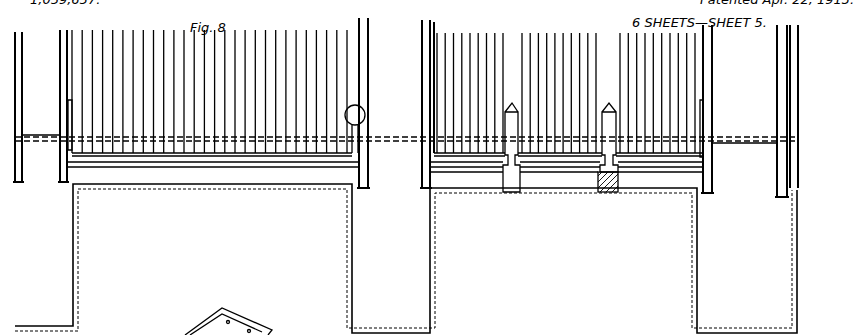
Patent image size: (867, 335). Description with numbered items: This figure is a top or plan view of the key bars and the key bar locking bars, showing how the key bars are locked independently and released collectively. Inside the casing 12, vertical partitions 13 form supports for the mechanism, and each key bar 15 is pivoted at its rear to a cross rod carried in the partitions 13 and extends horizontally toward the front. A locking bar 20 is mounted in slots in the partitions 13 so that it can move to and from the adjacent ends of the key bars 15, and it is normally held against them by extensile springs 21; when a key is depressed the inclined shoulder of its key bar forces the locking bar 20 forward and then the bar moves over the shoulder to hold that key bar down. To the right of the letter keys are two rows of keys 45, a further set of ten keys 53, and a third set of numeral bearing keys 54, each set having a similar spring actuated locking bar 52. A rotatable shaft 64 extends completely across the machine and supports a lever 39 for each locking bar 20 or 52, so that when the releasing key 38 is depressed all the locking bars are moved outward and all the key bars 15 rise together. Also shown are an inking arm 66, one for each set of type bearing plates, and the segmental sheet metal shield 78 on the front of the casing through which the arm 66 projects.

The casing 12 is at (208, 190).
The vertical partitions 13 is at (61, 106).
The key bar 15 is at (219, 66).
The locking bar 20 is at (240, 167).
The extensile springs 21 is at (597, 180).
The releasing key 38 is at (358, 113).
The lever 39 is at (68, 125).
The keys 45 is at (469, 94).
The locking bar 52 is at (476, 167).
The set of keys 53 is at (560, 94).
The set of numeral bearing keys 54 is at (659, 94).
The rotatable shaft 64 is at (406, 147).
The arm 66 is at (383, 321).
The segmental sheet metal shield 78 is at (78, 306).